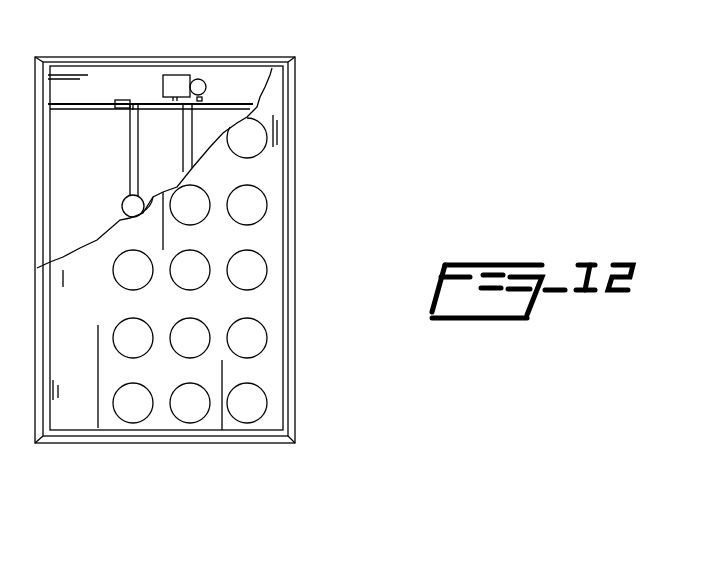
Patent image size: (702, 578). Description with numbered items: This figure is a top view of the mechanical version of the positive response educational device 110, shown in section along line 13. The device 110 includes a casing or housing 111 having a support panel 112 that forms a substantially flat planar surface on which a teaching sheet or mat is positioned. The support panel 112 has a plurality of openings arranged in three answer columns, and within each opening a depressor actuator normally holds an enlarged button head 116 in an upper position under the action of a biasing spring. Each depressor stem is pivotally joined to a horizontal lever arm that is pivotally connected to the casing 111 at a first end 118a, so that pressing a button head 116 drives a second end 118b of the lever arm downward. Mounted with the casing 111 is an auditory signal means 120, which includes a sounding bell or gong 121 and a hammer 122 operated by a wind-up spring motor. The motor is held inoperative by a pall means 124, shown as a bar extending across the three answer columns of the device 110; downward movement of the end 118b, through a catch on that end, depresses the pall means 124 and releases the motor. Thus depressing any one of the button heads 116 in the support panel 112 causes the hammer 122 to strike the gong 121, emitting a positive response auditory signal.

The educational device 110 is at (336, 110).
The casing 111 is at (285, 97).
The support panel 112 is at (263, 170).
The button head 116 is at (147, 388).
The first end of lever arm 118a is at (130, 140).
The second end of lever arm 118b is at (185, 142).
The auditory signal means 120 is at (183, 53).
The sounding bell 121 is at (200, 79).
The hammer 122 is at (203, 98).
The pall means 124 is at (147, 100).
The section line 13- 13 is at (340, 206).